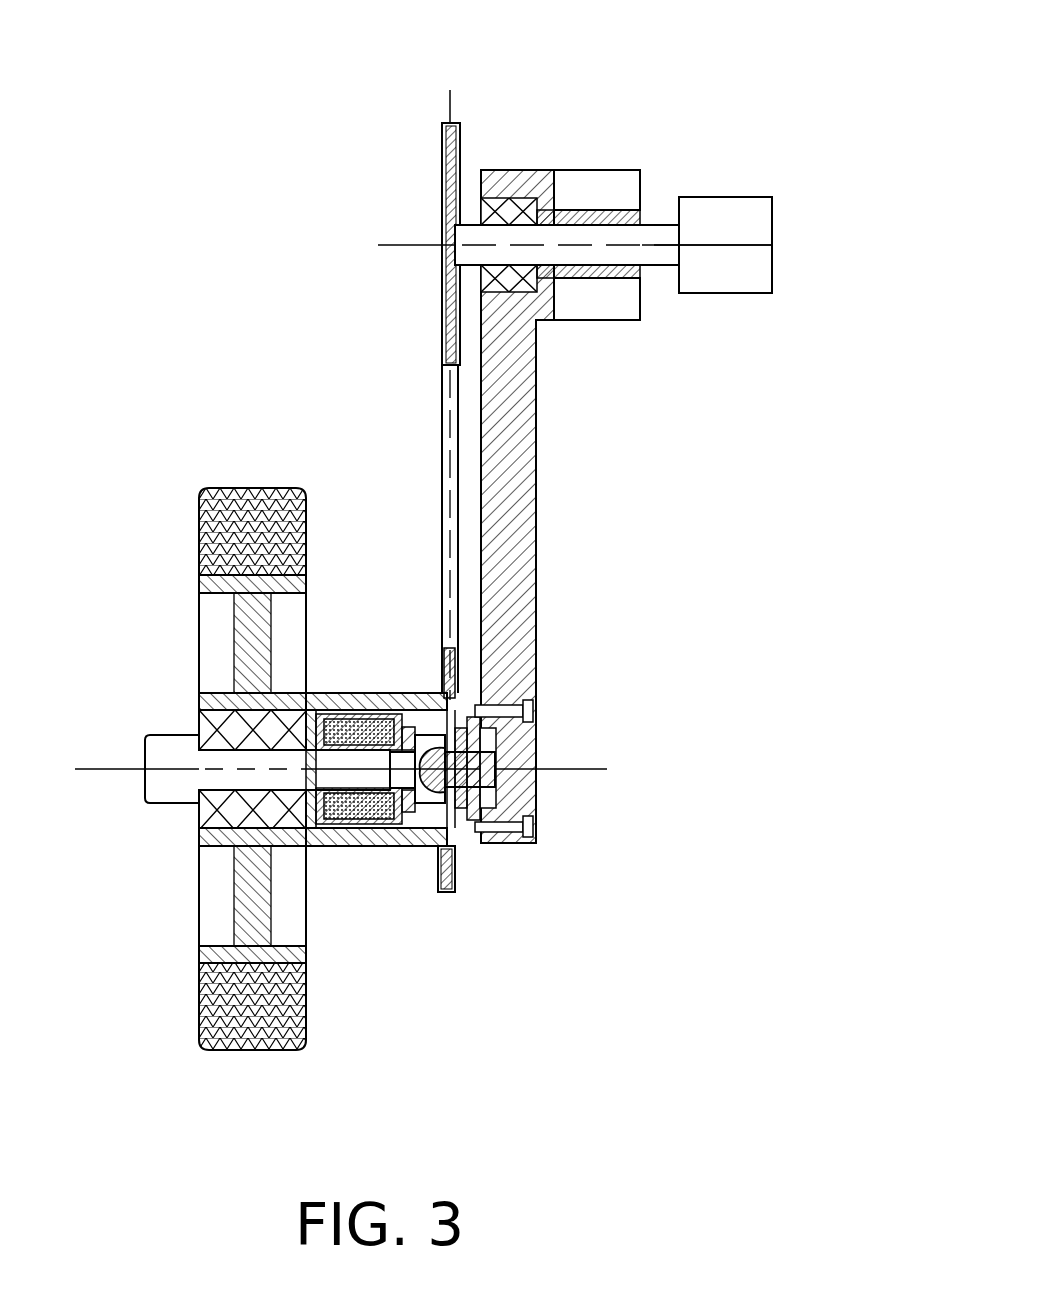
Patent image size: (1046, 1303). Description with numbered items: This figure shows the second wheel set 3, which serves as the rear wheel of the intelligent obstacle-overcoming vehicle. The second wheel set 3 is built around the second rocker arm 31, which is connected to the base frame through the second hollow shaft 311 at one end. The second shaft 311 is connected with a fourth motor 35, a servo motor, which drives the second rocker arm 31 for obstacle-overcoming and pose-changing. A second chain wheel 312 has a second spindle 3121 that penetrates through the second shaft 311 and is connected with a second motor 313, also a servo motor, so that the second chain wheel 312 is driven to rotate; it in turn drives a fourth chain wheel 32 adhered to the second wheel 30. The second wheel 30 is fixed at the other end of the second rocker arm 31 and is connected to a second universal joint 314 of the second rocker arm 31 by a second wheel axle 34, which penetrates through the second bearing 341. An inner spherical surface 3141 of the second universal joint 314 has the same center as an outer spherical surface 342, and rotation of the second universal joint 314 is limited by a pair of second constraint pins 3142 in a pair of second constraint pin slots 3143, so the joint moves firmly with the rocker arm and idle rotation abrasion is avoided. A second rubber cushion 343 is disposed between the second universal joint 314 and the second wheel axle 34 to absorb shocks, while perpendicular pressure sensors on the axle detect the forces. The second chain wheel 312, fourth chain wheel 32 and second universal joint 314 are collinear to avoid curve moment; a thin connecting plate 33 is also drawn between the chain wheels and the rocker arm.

The second wheel set 3 is at (190, 124).
The second wheel 30 is at (192, 498).
The second rocker arm 31 is at (537, 490).
The second hollow shaft 311 is at (637, 215).
The second spindle 3121 is at (658, 267).
The second chain wheel 312 is at (447, 152).
The second motor 313 is at (748, 197).
The second universal joint 314 is at (437, 735).
The inner spherical surface 3141 is at (462, 843).
The second constraint pins 3142 is at (493, 720).
The second constraint pin slots 3143 is at (458, 850).
The fourth chain wheel 32 is at (447, 893).
The connecting plate 33 is at (442, 407).
The second wheel axle 34 is at (367, 846).
The second bearing 341 is at (199, 722).
The outer spherical surface 342 is at (380, 700).
The second rubber cushion 343 is at (322, 846).
The fourth motor 35 is at (598, 170).